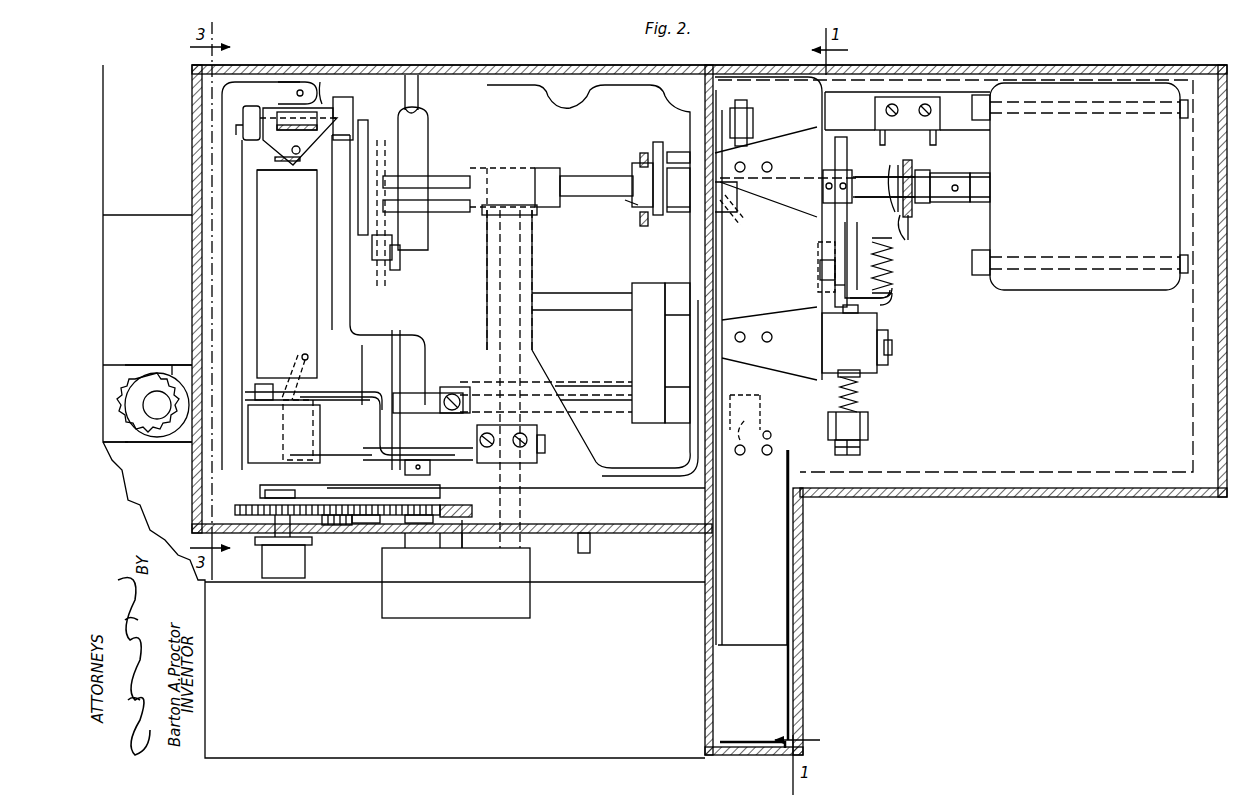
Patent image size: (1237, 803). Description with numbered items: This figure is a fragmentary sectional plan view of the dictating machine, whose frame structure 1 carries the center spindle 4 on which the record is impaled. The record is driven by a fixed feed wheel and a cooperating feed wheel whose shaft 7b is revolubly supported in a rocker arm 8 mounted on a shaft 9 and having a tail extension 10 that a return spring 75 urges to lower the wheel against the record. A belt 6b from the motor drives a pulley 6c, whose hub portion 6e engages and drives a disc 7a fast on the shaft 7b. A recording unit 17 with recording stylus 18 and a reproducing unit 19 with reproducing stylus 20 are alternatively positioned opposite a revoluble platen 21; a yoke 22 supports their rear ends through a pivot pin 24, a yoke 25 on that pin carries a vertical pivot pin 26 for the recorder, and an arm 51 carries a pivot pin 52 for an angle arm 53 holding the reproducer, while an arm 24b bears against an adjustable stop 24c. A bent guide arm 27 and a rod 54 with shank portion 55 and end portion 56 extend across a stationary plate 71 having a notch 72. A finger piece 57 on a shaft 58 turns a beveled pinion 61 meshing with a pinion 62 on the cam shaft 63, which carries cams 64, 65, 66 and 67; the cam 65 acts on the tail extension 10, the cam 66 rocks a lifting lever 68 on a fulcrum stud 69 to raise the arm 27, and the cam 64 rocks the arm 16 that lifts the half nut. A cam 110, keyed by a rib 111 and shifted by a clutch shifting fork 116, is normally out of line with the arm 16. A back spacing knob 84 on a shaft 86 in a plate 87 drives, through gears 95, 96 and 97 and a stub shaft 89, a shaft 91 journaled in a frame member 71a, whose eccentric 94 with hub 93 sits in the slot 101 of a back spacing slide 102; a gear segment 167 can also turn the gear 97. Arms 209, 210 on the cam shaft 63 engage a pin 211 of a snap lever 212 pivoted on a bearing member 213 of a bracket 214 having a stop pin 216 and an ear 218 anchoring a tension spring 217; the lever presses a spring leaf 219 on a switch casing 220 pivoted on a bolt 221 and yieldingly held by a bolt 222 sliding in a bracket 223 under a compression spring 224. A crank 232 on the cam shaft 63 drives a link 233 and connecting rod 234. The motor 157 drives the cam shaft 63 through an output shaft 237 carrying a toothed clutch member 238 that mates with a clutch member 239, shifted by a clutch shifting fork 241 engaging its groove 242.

The frame structure 1 is at (580, 58).
The center spindle 4 is at (140, 415).
The belt 6b is at (790, 563).
The pulley 6c is at (712, 556).
The hub portion 6e is at (742, 410).
The disc 7a is at (735, 375).
The shaft 7b is at (585, 405).
The rocker arm 8 is at (585, 300).
The shaft 9 is at (565, 293).
The tail extension 10 is at (428, 127).
The upwardly extending arm 16 is at (678, 152).
The recording unit 17 is at (257, 262).
The recording stylus 18 is at (304, 354).
The reproducing unit 19 is at (250, 462).
The reproducing stylus 20 is at (300, 400).
The revoluble platen 21 is at (282, 358).
The yoke 22 is at (243, 130).
The pivot pin 24 is at (250, 108).
The arm 24b is at (343, 97).
The stop 24c is at (337, 163).
The yoke 25 is at (270, 110).
The vertical pivot pin 26 is at (296, 160).
The bent guide arm 27 is at (426, 360).
The arm 51 is at (322, 80).
The pivot pin 52 is at (297, 93).
The angle arm 53 is at (240, 226).
The arm or rod 54 is at (390, 382).
The shank portion 55 is at (262, 384).
The end portion 56 is at (382, 430).
The operating finger piece 57 is at (445, 618).
The shaft 58 is at (472, 513).
The beveled pinion 61 is at (537, 222).
The beveled pinion 62 is at (540, 168).
The cam shaft 63 is at (578, 176).
The cam 64 is at (675, 212).
The cam 65 is at (428, 176).
The cam 66 is at (386, 162).
The cam 67 is at (368, 130).
The lifting lever 68 is at (372, 246).
The fulcrum stud 69 is at (393, 265).
The stationary plate 71 is at (332, 290).
The frame member 71a is at (575, 484).
The notch 72 is at (300, 425).
The return spring 75 is at (418, 106).
The back spacing knob 84 is at (262, 564).
The shaft 86 is at (260, 520).
The plate 87 is at (312, 488).
The stub shaft 89 is at (362, 523).
The shaft 91 is at (422, 481).
The hub 93 is at (405, 470).
The eccentric 94 is at (428, 445).
The gear 95 is at (245, 498).
The gear 96 is at (335, 525).
The gear 97 is at (412, 523).
The slot 101 is at (458, 445).
The back spacing slide 102 is at (470, 405).
The cam 110 is at (657, 142).
The rib or key 111 is at (630, 202).
The clutch shifting fork 116 is at (640, 157).
The motor 157 is at (1070, 290).
The gear segment 167 is at (462, 533).
The arm 209 is at (838, 213).
The arm 210 is at (835, 150).
The pin 211 is at (858, 232).
The snap lever 212 is at (838, 282).
The bearing member 213 is at (835, 265).
The bracket 214 is at (893, 252).
The upper pin 216 is at (835, 247).
The tension spring 217 is at (893, 270).
The ear 218 is at (880, 303).
The spring leaf 219 is at (850, 313).
The casing element 220 is at (822, 332).
The bolt 221 is at (892, 348).
The bolt 222 is at (868, 425).
The frame bracket 223 is at (860, 447).
The compression spring 224 is at (858, 396).
The crank 232 is at (737, 220).
The link 233 is at (738, 205).
The connecting rod 234 is at (745, 112).
The motor output shaft 237 is at (990, 186).
The toothed clutch member 238 is at (930, 175).
The clutch member 239 is at (890, 172).
The clutch shifting fork 241 is at (912, 205).
The groove 242 is at (898, 165).